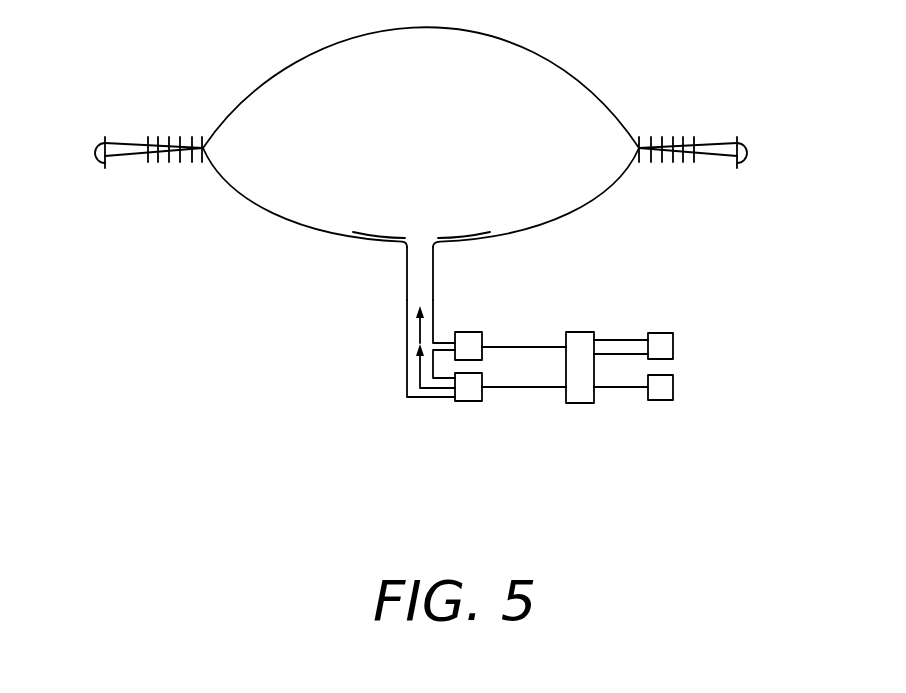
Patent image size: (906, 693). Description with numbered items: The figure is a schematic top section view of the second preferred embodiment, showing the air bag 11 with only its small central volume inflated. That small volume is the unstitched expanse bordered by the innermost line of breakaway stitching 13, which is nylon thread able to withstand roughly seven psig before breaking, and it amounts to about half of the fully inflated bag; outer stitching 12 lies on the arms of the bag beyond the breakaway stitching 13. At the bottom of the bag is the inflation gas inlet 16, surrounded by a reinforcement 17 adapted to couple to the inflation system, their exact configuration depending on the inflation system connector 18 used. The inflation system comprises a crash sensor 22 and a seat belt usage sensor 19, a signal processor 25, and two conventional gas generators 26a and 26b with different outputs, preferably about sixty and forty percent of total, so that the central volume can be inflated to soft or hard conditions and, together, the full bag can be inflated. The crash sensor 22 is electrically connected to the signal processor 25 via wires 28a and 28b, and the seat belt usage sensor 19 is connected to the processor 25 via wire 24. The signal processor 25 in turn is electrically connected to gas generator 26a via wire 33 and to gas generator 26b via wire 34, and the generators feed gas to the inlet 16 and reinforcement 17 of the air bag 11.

The air bag 11 is at (567, 67).
The stitching 12 is at (102, 128).
The breakaway stitching 13 is at (177, 127).
The inflation gas inlet 16 is at (424, 237).
The reinforcement 17 is at (387, 230).
The inflation system connector 18 is at (407, 287).
The air bag gas generator 26a is at (465, 405).
The air bag gas generator 26b is at (470, 332).
The wire 34 is at (517, 343).
The wire 33 is at (527, 390).
The signal processor 25 is at (577, 405).
The wire 28a is at (606, 336).
The wire 28b is at (632, 352).
The wire 24 is at (624, 390).
The crash sensor 22 is at (673, 347).
The seat belt usage sensor 19 is at (673, 387).